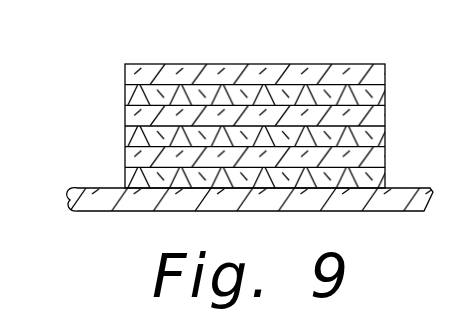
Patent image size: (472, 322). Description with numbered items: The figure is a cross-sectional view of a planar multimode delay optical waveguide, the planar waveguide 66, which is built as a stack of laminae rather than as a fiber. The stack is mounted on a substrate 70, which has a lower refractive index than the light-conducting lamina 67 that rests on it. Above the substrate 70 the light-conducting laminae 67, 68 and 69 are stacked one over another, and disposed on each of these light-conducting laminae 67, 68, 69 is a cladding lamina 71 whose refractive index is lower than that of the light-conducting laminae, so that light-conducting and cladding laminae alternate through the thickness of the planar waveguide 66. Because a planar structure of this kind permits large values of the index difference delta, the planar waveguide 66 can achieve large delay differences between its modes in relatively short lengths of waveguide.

The planar waveguide 66 is at (241, 60).
The light-conducting lamina 67 is at (380, 179).
The light-conducting lamina 68 is at (376, 135).
The light-conducting lamina 69 is at (378, 91).
The substrate 70 is at (386, 212).
The cladding lamina 71 is at (136, 72).